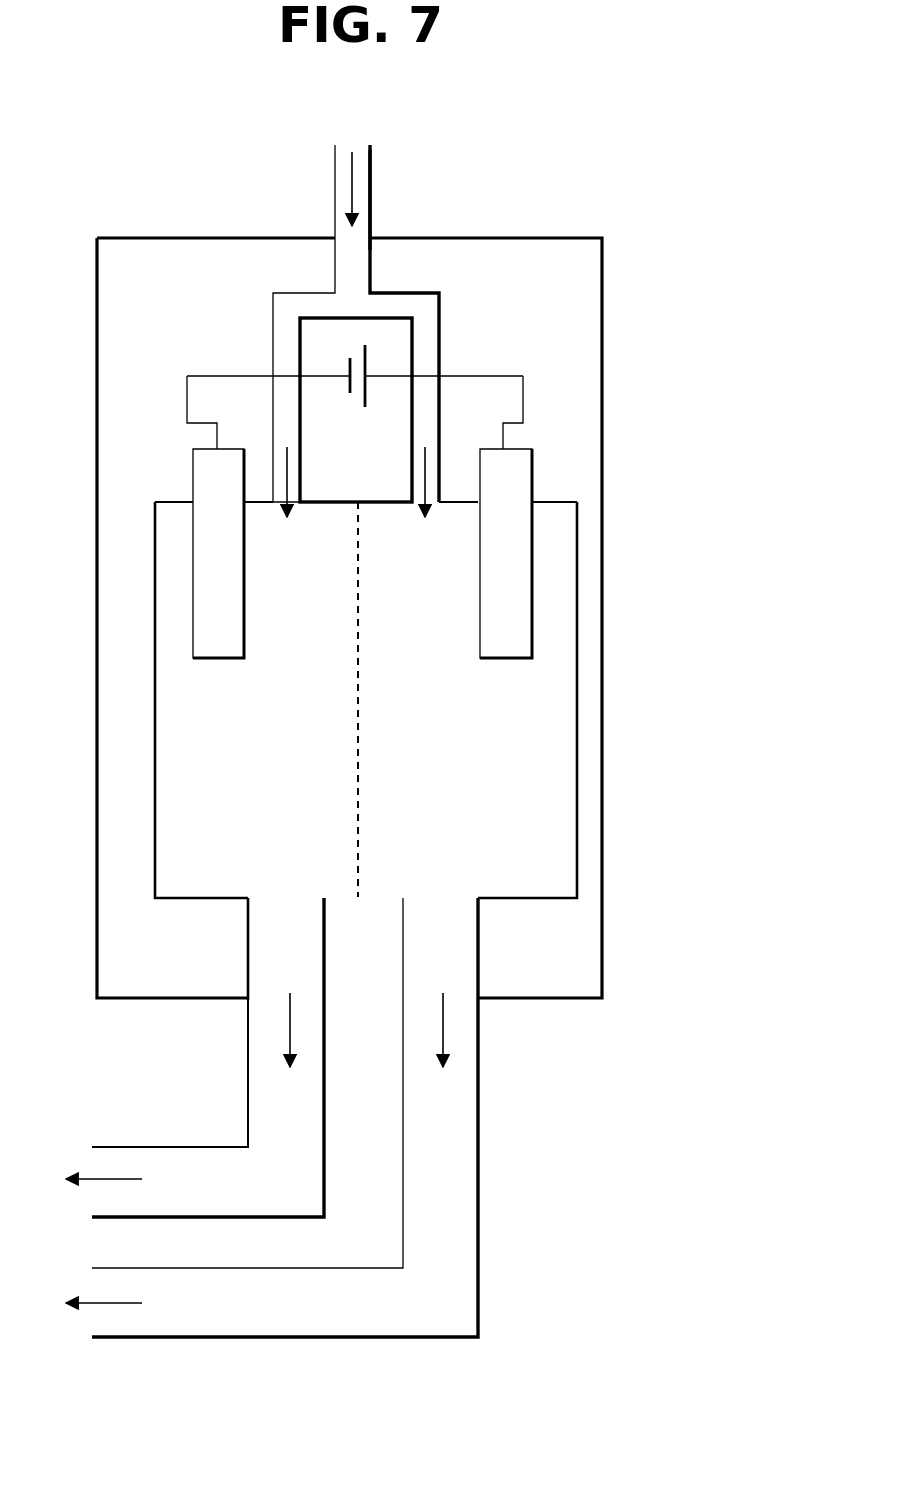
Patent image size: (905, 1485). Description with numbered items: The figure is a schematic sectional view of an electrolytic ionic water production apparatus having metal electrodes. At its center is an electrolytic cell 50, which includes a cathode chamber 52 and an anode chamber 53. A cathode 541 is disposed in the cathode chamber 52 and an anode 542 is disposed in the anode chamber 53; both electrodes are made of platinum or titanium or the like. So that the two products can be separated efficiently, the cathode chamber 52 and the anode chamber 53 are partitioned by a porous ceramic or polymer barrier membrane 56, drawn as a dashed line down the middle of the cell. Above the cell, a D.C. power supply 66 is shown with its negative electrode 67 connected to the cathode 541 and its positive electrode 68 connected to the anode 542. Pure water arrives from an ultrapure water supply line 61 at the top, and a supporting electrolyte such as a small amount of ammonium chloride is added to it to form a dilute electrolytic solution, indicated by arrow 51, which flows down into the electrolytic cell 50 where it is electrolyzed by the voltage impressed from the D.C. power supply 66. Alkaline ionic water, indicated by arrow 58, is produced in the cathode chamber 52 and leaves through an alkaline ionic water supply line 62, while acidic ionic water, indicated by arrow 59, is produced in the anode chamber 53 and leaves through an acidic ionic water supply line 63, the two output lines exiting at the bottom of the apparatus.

The electrolytic cell 50 is at (580, 755).
The dilute electrolytic solution 51 is at (355, 212).
The cathode chamber 52 is at (208, 873).
The anode chamber 53 is at (541, 873).
The cathode 541 is at (218, 638).
The anode 542 is at (503, 638).
The barrier membrane 56 is at (360, 825).
The alkaline ionic water 58 is at (288, 1037).
The acidic ionic water 59 is at (445, 1040).
The ultrapure water supply line 61 is at (371, 178).
The alkaline ionic water supply line 62 is at (247, 1113).
The acidic ionic water supply line 63 is at (480, 1182).
The D.C. power supply 66 is at (343, 345).
The negative electrode 67 is at (343, 373).
The positive electrode 68 is at (367, 362).